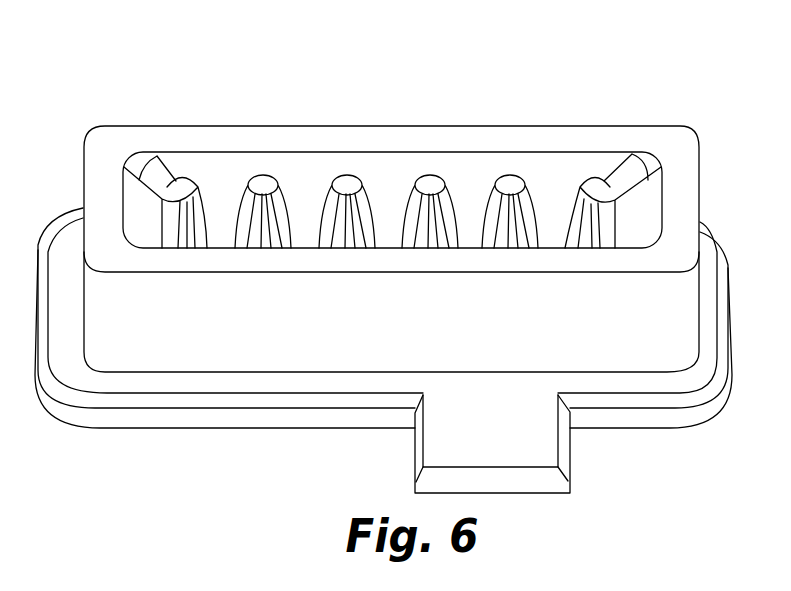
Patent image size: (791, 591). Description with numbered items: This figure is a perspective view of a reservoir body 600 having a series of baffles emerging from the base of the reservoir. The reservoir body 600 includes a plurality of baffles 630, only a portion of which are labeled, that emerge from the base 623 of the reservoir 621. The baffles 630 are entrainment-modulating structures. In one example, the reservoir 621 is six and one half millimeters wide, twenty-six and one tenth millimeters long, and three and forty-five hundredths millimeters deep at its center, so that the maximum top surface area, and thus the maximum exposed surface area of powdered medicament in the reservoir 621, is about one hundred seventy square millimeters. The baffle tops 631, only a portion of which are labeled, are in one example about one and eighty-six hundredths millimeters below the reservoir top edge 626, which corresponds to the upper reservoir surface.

The reservoir body 600 is at (652, 63).
The reservoir 621 is at (466, 180).
The base 623 is at (633, 195).
The reservoir top edge 626 is at (130, 138).
The baffles 630 is at (337, 220).
The baffle tops 631 is at (428, 186).